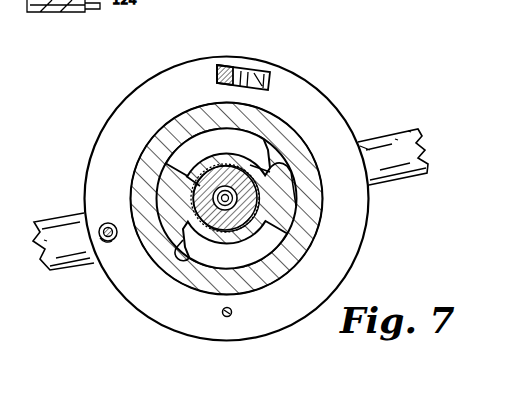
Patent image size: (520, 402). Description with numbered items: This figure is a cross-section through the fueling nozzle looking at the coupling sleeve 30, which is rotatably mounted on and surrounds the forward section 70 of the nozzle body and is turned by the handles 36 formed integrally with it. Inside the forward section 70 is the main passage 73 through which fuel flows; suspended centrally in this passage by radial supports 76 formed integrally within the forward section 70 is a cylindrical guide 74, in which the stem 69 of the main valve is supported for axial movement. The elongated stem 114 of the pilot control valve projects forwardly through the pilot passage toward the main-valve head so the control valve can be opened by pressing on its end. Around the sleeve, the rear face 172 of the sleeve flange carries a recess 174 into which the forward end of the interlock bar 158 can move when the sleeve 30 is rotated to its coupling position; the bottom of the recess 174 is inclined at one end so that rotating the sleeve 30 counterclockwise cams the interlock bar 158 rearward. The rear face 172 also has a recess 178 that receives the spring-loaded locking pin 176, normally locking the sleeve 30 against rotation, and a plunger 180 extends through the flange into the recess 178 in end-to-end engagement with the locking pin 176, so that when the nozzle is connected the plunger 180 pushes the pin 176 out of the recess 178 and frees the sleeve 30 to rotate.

The coupling sleeve 30 is at (375, 247).
The handles 36 is at (393, 132).
The stem 69 is at (222, 170).
The forward section 70 is at (312, 238).
The main passage 73 is at (178, 146).
The cylindrical guide 74 is at (303, 200).
The radial supports 76 is at (292, 170).
The stem 114 is at (198, 180).
The interlock bar 158 is at (236, 66).
The rear face 172 is at (323, 121).
The recess 174 is at (262, 72).
The locking pin 176 is at (234, 312).
The recess 178 is at (108, 222).
The plunger 180 is at (112, 242).